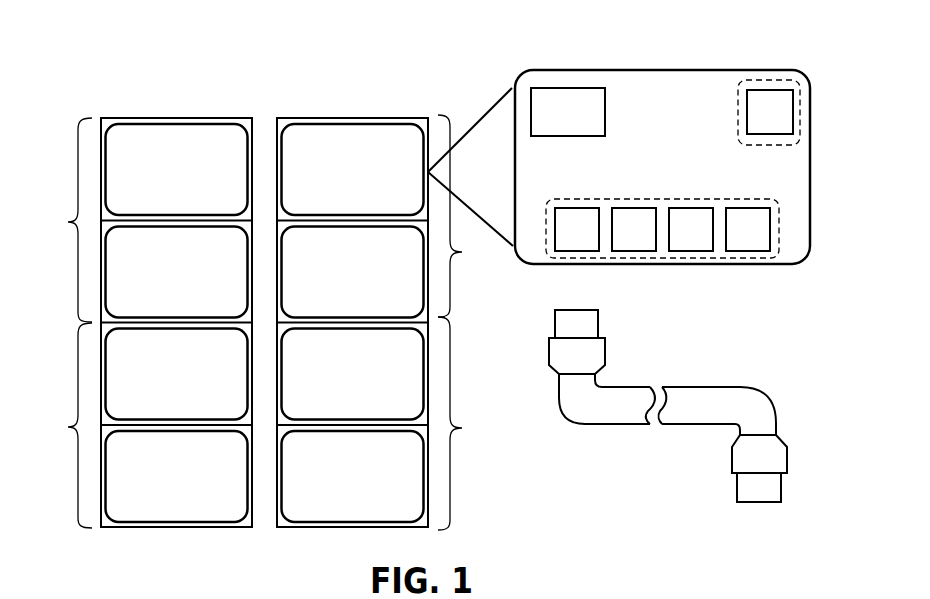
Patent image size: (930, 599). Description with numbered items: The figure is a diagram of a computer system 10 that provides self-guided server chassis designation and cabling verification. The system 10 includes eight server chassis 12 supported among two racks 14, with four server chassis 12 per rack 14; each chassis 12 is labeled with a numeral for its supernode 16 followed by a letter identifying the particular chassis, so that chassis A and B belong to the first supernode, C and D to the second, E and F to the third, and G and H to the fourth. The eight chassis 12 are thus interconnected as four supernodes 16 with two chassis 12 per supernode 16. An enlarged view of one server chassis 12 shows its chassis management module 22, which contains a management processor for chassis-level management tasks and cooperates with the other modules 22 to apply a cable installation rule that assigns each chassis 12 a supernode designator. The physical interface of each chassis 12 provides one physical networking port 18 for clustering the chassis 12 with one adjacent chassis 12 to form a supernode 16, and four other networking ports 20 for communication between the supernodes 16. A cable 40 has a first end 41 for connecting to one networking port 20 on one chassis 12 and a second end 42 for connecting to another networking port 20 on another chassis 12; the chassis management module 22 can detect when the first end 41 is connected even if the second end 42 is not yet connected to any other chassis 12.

The computer system 10 is at (511, 472).
The server chassis 12 is at (253, 250).
The rack 14 is at (208, 118).
The supernode 16 is at (261, 322).
The physical networking port 18 is at (776, 82).
The networking port 20 is at (663, 262).
The chassis management module 22 is at (583, 88).
The cable 40 is at (697, 387).
The first end 41 is at (606, 345).
The second end 42 is at (730, 458).